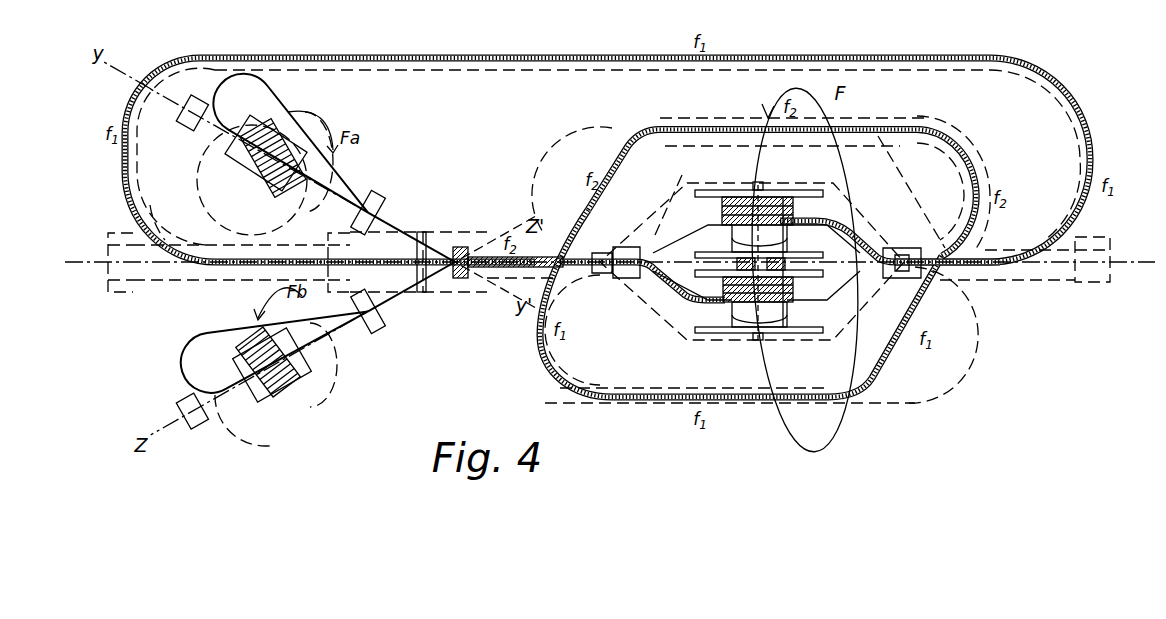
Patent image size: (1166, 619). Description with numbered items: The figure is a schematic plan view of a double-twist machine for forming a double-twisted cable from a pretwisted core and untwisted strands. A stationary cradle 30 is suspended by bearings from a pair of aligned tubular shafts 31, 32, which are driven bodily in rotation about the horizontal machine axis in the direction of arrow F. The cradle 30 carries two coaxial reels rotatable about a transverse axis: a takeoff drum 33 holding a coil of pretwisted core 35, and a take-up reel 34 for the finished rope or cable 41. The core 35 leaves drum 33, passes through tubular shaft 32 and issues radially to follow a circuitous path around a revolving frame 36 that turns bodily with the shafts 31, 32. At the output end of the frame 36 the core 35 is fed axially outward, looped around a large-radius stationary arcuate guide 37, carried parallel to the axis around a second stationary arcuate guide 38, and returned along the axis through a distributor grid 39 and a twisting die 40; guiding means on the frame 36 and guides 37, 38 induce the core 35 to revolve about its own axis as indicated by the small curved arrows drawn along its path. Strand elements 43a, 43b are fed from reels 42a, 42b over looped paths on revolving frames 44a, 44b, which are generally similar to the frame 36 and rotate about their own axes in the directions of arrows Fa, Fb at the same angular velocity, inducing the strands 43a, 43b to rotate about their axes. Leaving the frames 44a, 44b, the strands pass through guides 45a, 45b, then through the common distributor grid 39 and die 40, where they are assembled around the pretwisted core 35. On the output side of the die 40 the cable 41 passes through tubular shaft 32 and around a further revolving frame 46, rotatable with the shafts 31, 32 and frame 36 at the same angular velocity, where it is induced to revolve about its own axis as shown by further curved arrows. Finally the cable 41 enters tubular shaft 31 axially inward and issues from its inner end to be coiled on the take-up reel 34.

The stationary cradle 30 is at (866, 303).
The tubular shaft 31 is at (1028, 284).
The tubular shaft 32 is at (480, 300).
The takeoff reel or drum 33 is at (701, 336).
The take-up reel or drum 34 is at (808, 190).
The pretwisted core 35 is at (414, 263).
The revolving frame 36 is at (602, 388).
The stationary arcuate guide 37 is at (1082, 146).
The stationary arcuate guide 38 is at (157, 214).
The distributor grid 39 is at (430, 234).
The twisting die 40 is at (482, 248).
The rope or cable 41 is at (842, 228).
The reel 42a is at (250, 178).
The reel 42b is at (300, 396).
The strand element 43a is at (242, 150).
The strand element 43b is at (236, 392).
The revolving frame 44a is at (278, 92).
The revolving frame 44b is at (197, 353).
The guide 45a is at (385, 205).
The guide 45b is at (368, 328).
The revolving frame 46 is at (700, 126).